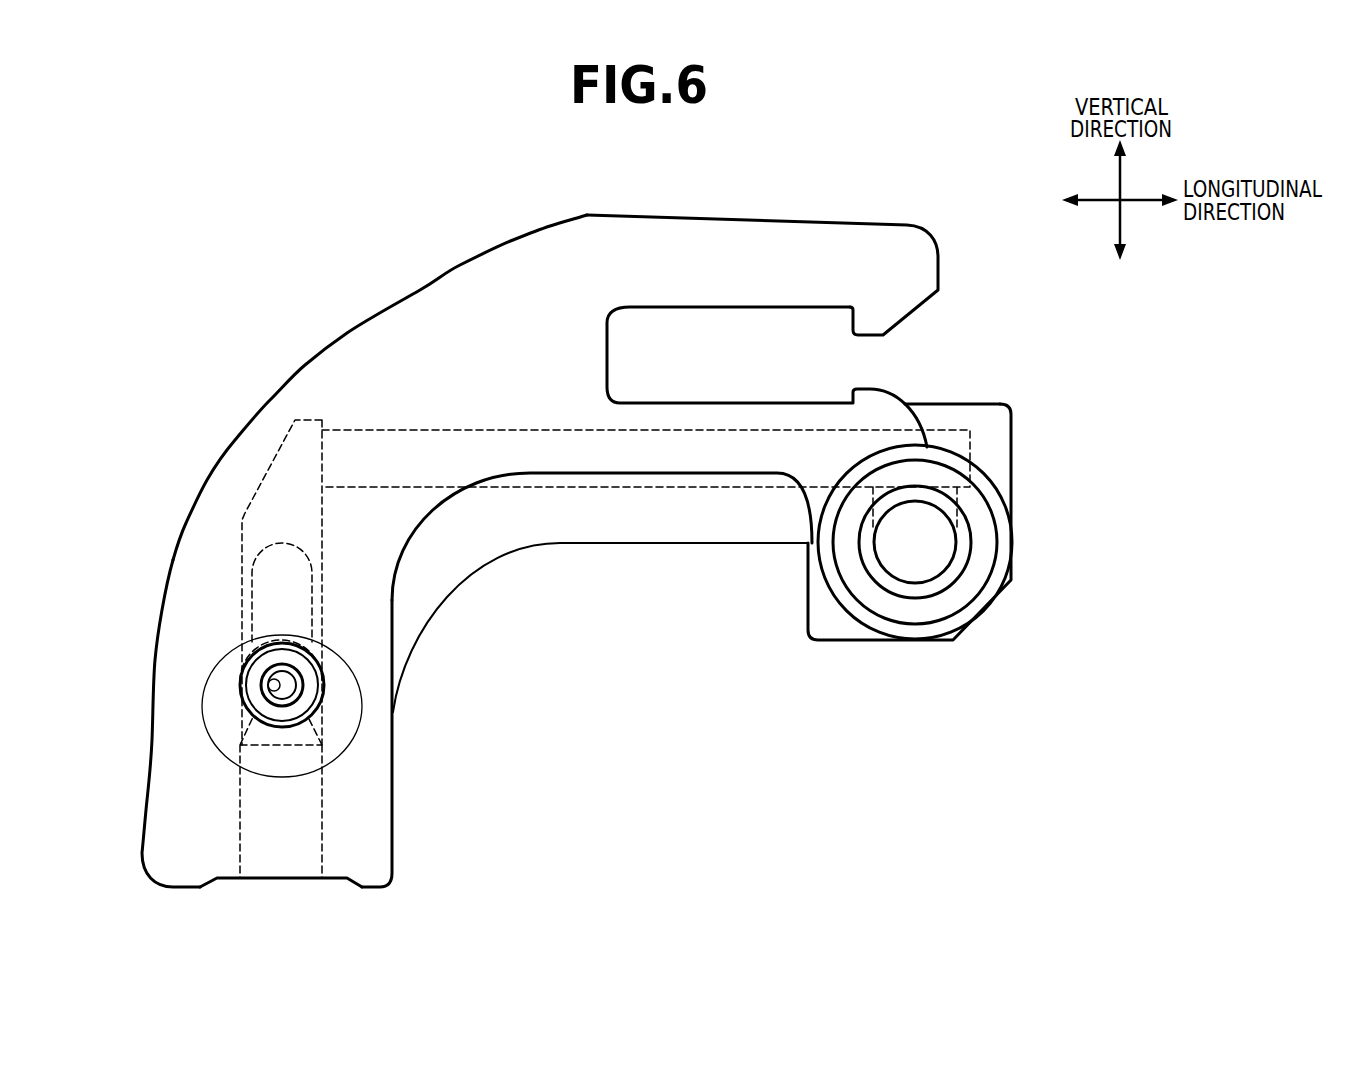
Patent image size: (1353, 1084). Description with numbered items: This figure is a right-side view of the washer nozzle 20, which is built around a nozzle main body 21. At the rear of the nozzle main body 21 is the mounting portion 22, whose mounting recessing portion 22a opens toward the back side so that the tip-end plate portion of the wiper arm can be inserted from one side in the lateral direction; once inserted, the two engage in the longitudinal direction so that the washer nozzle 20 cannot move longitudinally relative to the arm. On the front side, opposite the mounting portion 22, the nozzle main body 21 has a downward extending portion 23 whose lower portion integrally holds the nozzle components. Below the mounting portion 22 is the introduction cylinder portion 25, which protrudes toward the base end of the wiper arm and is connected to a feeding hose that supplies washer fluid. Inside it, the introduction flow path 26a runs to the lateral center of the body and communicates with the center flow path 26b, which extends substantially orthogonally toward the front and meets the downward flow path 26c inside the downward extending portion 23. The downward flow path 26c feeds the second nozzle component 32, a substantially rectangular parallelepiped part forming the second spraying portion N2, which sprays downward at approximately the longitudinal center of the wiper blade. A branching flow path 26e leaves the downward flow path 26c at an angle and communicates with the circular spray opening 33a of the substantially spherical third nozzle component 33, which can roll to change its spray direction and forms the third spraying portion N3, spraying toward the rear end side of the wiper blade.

The washer nozzle 20 is at (403, 203).
The nozzle main body 21 is at (348, 333).
The mounting portion 22 is at (831, 222).
The mounting recessing portion 22a is at (787, 311).
The downward extending portion 23 is at (148, 787).
The introduction cylinder portion 25 is at (987, 497).
The introduction flow path 26a is at (946, 567).
The center flow path 26b is at (573, 437).
The downward flow path 26c is at (265, 486).
The branching flow path 26e is at (254, 600).
The second nozzle component 32 is at (292, 862).
The third nozzle component 33 is at (263, 668).
The spray opening 33a is at (268, 697).
The second spraying portion N2 is at (252, 879).
The third spraying portion N3 is at (364, 678).